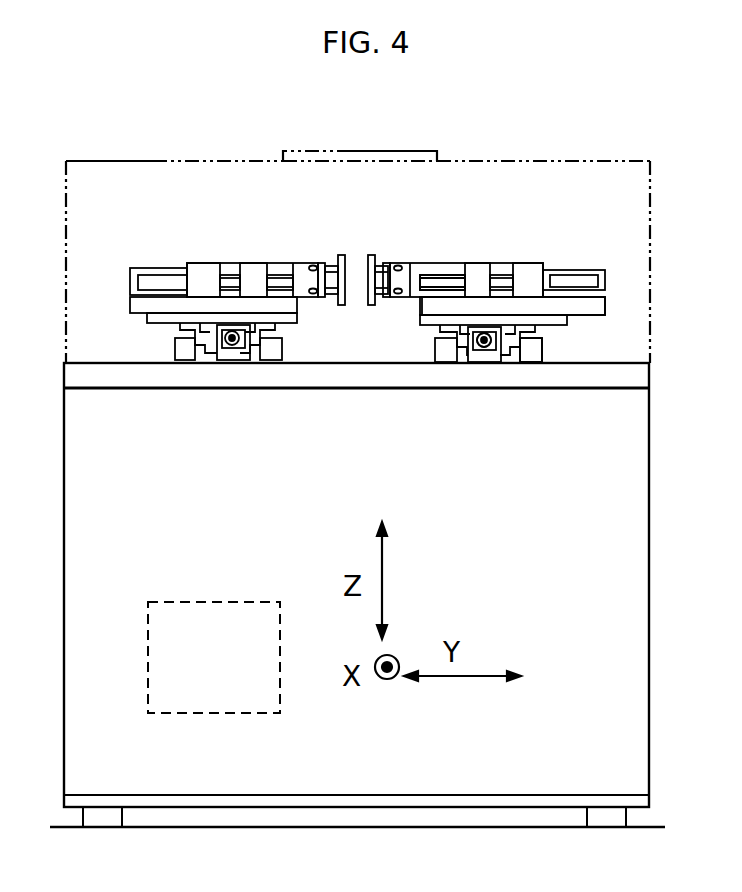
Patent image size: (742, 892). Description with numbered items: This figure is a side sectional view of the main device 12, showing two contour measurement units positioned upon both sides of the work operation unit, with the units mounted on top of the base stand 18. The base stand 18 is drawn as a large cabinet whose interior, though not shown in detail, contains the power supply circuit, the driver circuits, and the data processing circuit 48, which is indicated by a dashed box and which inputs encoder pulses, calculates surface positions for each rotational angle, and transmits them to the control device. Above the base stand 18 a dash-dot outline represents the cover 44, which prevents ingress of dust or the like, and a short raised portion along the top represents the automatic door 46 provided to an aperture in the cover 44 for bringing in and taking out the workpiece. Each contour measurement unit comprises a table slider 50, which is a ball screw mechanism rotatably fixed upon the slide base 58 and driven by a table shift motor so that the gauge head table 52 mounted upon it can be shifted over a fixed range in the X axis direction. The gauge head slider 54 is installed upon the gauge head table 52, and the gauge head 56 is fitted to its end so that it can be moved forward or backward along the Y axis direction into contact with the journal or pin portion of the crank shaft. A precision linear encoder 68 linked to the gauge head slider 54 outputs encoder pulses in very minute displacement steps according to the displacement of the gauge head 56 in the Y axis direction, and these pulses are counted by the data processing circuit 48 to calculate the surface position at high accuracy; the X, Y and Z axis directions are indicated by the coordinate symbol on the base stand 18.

The main device 12 is at (163, 153).
The base stand 18 is at (628, 523).
The cover 44 is at (553, 160).
The automatic door 46 is at (377, 150).
The data processing circuit 48 is at (214, 657).
The table slider 50 is at (485, 350).
The gauge head table 52 is at (433, 302).
The gauge head slider 54 is at (410, 262).
The gauge head 56 is at (362, 255).
The slide base 58 is at (543, 347).
The precision linear encoder 68 is at (448, 262).